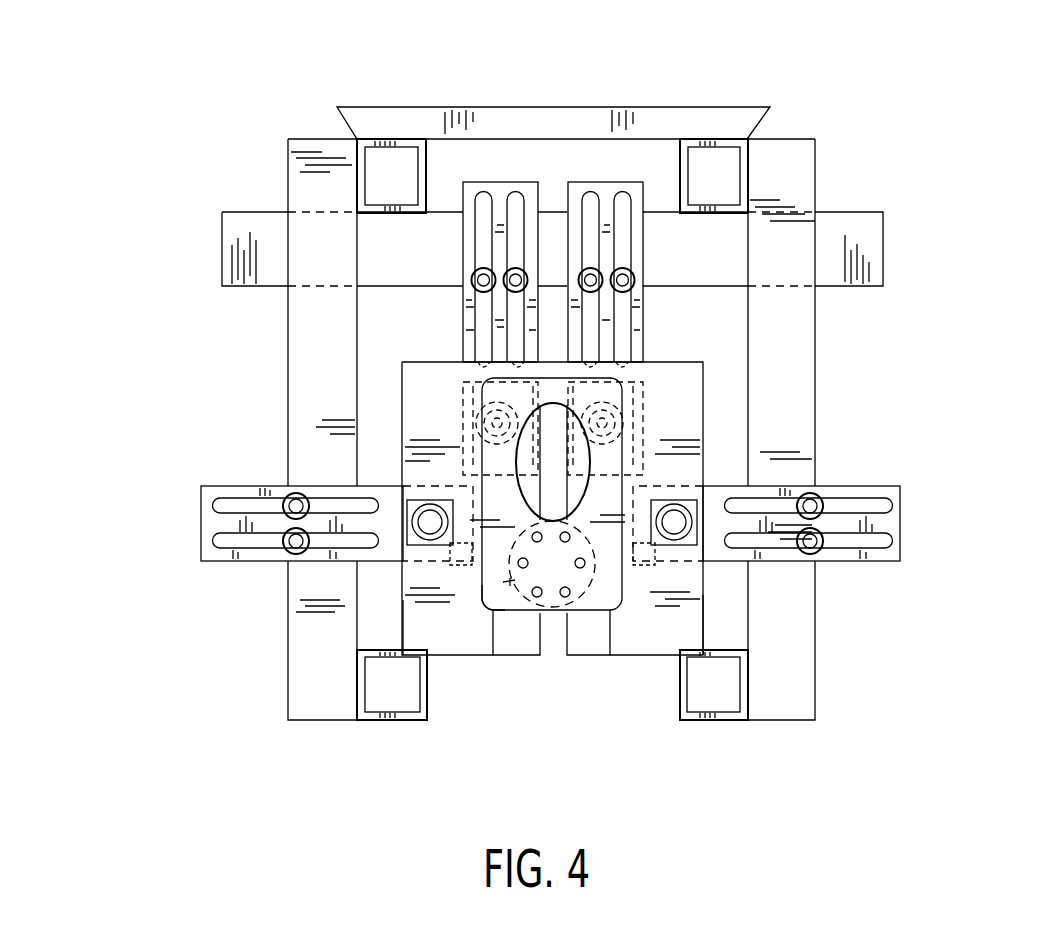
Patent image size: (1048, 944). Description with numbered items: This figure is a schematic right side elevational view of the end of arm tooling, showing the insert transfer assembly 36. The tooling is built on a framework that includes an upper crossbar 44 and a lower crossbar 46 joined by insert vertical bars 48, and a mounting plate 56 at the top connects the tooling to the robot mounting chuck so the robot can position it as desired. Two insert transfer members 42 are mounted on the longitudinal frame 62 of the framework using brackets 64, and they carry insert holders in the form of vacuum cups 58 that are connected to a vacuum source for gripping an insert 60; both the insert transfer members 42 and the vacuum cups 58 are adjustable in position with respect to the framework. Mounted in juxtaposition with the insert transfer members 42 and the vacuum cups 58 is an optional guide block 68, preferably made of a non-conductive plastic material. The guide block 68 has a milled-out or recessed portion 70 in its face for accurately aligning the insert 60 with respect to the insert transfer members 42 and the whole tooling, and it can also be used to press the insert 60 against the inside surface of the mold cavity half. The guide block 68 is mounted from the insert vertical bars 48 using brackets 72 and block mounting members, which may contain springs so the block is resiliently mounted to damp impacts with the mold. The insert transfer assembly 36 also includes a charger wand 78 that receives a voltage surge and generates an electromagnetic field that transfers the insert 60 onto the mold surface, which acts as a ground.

The insert transfer assembly 36 is at (725, 367).
The insert transfer members 42 is at (466, 385).
The upper crossbar 44 is at (393, 138).
The lower crossbar 46 is at (727, 722).
The insert vertical bars 48 is at (287, 614).
The mounting plate 56 is at (643, 105).
The vacuum cups 58 is at (470, 415).
The insert 60 is at (613, 617).
The longitudinal frame 62 is at (843, 210).
The brackets 64 is at (462, 304).
The guide block 68 is at (403, 615).
The recessed portion 70 is at (483, 596).
The brackets 72 is at (240, 486).
The charger wand 78 is at (480, 598).